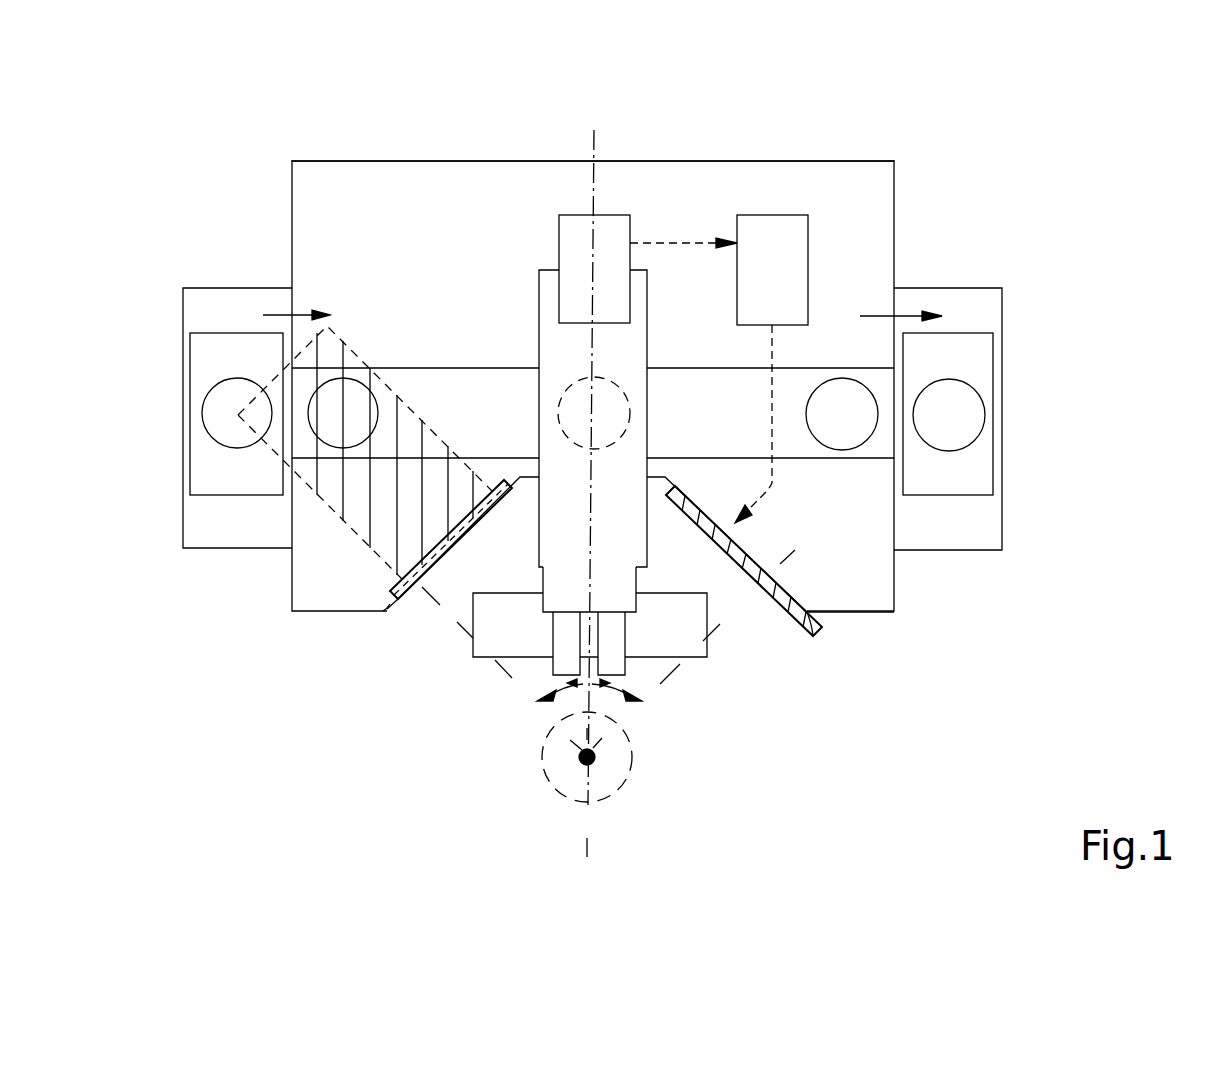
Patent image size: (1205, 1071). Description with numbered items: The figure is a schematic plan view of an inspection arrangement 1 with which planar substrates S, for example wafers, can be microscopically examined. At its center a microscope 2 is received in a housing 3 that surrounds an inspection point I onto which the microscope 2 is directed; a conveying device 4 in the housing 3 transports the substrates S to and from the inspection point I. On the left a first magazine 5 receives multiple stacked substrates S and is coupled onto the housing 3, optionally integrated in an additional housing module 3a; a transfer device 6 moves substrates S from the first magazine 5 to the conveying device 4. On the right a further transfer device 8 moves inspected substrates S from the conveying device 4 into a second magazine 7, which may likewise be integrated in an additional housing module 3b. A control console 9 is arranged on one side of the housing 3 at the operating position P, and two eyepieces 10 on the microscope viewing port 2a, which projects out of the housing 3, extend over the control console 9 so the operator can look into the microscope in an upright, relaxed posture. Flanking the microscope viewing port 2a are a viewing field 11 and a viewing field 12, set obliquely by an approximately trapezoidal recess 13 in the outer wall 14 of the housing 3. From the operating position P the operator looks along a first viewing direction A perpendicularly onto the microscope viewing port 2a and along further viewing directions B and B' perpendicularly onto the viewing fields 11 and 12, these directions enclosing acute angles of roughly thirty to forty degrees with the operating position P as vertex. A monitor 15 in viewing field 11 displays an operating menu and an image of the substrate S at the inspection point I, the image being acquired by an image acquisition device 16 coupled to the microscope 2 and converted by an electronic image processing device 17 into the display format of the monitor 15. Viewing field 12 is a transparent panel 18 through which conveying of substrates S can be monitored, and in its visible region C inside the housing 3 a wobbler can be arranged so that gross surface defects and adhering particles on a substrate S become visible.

The inspection arrangement 1 is at (942, 172).
The microscope 2 is at (550, 282).
The microscope viewing port 2a is at (628, 583).
The housing 3 is at (390, 160).
The additional housing module 3a is at (197, 289).
The additional housing module 3b is at (1003, 388).
The conveying device 4 is at (417, 373).
The first magazine 5 is at (213, 363).
The transfer device 6 is at (282, 315).
The second magazine 7 is at (972, 355).
The further transfer device 8 is at (880, 316).
The control console 9 is at (490, 635).
The eyepieces 10 is at (552, 663).
The viewing field 11 is at (822, 616).
The viewing field 12 is at (383, 613).
The recess 13 is at (655, 480).
The outer wall 14 is at (887, 617).
The monitor 15 is at (783, 607).
The image acquisition device 16 is at (612, 232).
The electronic image processing device 17 is at (782, 233).
The transparent panel 18 is at (403, 600).
The first viewing direction A is at (585, 843).
The further viewing direction B is at (727, 674).
The further viewing direction B' is at (472, 692).
The visible region C is at (335, 480).
The inspection point I is at (577, 397).
The operating position P is at (592, 763).
The substrate S is at (333, 423).